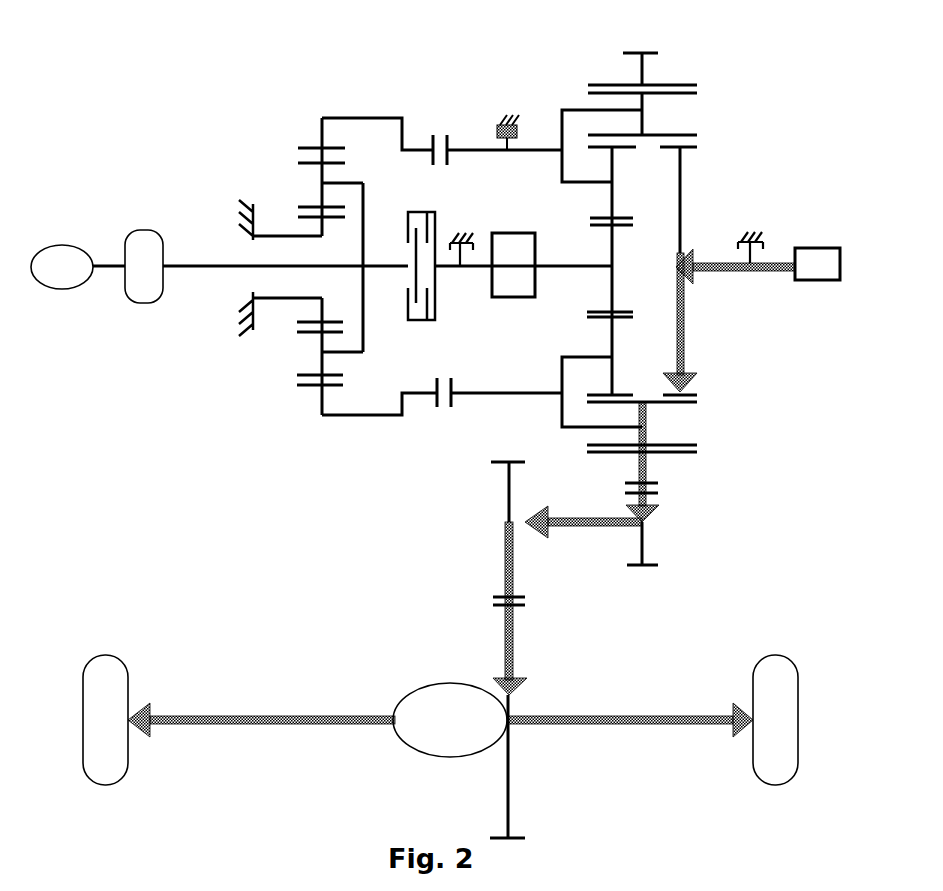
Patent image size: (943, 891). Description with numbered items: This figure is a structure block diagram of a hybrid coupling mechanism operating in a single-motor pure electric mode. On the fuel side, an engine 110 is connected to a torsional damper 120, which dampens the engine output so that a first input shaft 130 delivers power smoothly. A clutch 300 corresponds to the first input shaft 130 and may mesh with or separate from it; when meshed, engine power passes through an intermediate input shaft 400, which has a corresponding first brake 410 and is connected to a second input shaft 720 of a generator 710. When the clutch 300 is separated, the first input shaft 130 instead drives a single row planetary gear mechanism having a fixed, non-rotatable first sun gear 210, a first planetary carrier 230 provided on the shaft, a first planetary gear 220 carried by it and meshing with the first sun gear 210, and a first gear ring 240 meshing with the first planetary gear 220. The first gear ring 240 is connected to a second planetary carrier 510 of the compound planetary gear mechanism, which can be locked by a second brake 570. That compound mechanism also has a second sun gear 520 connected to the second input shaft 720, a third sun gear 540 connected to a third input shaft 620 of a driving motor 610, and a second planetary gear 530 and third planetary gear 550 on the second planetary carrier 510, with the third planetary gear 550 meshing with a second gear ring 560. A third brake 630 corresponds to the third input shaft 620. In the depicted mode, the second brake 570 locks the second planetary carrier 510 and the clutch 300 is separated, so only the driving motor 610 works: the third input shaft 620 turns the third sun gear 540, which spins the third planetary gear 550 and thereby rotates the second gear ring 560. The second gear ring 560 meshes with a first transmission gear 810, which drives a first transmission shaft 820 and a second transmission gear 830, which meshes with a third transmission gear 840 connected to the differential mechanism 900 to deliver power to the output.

The engine 110 is at (65, 245).
The torsional damper 120 is at (146, 230).
The first input shaft 130 is at (180, 269).
The first sun gear 210 is at (318, 228).
The first planetary gear 220 is at (306, 345).
The first planetary carrier 230 is at (343, 358).
The first gear ring 240 is at (362, 116).
The clutch 300 is at (424, 211).
The intermediate input shaft 400 is at (462, 270).
The first brake 410 is at (467, 228).
The second planetary carrier 510 is at (577, 108).
The second sun gear 520 is at (605, 291).
The second planetary gear 530 is at (600, 374).
The third sun gear 540 is at (685, 311).
The third planetary gear 550 is at (645, 124).
The second gear ring 560 is at (645, 70).
The second brake 570 is at (506, 117).
The driving motor 610 is at (799, 247).
The third input shaft 620 is at (767, 272).
The third brake 630 is at (748, 232).
The generator 710 is at (510, 288).
The second input shaft 720 is at (563, 262).
The first transmission gear 810 is at (646, 530).
The first transmission shaft 820 is at (572, 530).
The second transmission gear 830 is at (508, 498).
The third transmission gear 840 is at (505, 650).
The differential mechanism 900 is at (435, 728).